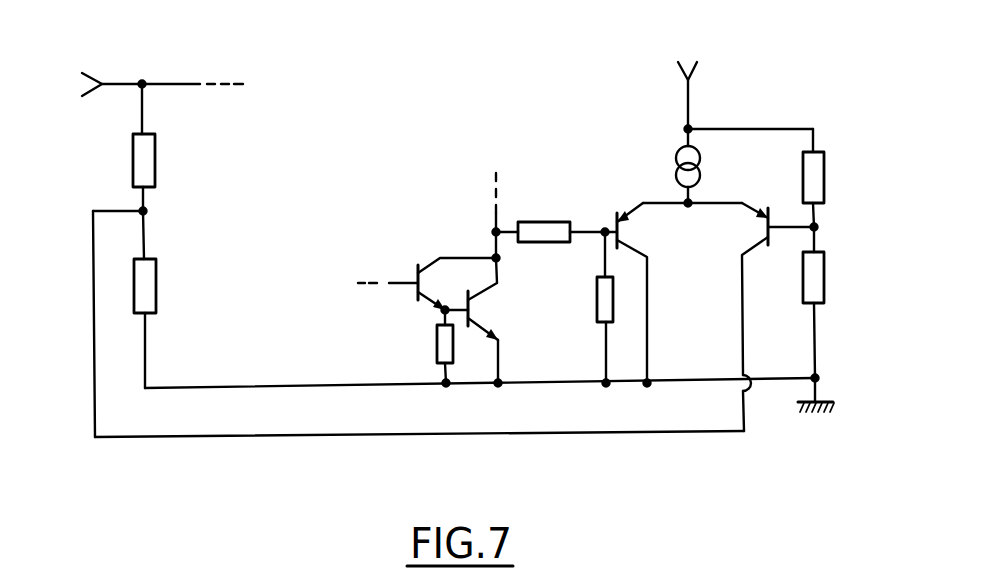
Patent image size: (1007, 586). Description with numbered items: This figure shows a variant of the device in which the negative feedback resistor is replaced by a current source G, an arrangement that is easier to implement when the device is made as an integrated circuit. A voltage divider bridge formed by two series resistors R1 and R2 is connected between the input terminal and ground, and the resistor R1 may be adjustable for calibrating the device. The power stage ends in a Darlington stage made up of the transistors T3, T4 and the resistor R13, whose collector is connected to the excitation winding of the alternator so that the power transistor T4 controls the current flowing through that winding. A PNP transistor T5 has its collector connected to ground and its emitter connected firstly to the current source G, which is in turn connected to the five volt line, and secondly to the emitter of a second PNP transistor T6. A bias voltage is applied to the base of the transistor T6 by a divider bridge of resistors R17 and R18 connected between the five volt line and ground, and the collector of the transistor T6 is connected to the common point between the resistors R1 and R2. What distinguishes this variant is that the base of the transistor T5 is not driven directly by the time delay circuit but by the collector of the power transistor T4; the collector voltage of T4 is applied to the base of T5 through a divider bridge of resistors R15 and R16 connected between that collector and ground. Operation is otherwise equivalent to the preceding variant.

The resistor R1 is at (126, 160).
The resistor R2 is at (131, 286).
The transistor T3 is at (427, 271).
The power transistor T4 is at (495, 299).
The resistor R13 is at (424, 346).
The resistor R15 is at (556, 213).
The resistor R16 is at (585, 307).
The PNP transistor T5 is at (627, 278).
The PNP transistor T6 is at (778, 273).
The current source G is at (675, 165).
The resistor R17 is at (834, 178).
The resistor R18 is at (834, 302).